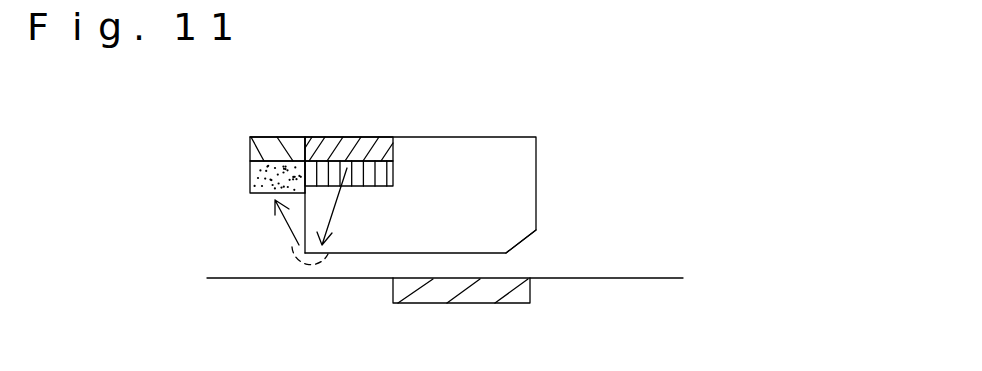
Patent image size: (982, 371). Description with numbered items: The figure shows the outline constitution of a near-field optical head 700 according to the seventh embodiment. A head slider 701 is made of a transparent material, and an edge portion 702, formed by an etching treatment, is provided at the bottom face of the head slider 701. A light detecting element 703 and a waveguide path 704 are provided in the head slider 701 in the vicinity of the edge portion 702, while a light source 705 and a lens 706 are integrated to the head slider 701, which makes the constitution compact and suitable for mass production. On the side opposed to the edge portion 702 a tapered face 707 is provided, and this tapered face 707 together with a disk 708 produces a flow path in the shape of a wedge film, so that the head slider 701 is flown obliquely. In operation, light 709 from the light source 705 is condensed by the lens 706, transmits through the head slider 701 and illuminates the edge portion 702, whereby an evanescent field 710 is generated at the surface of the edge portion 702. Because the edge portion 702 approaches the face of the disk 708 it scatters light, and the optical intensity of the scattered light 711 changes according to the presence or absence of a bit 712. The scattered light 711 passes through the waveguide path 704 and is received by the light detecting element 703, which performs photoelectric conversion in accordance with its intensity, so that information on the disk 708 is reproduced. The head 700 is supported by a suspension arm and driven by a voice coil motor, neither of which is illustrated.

The near-field optical head 700 is at (175, 128).
The head slider 701 is at (530, 159).
The edge portion 702 is at (303, 260).
The light detecting element 703 is at (277, 137).
The waveguide path 704 is at (257, 177).
The light source 705 is at (360, 137).
The lens 706 is at (395, 172).
The tapered face 707 is at (530, 240).
The disk 708 is at (660, 280).
The light 709 is at (338, 207).
The evanescent field 710 is at (293, 257).
The scattered light 711 is at (298, 243).
The bit 712 is at (523, 289).